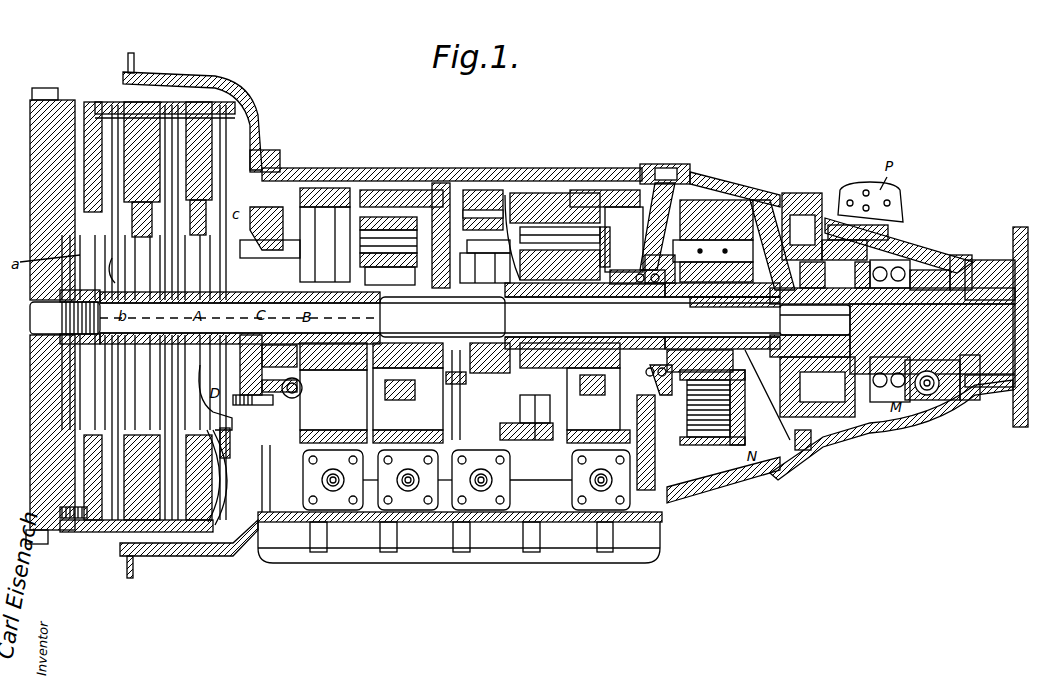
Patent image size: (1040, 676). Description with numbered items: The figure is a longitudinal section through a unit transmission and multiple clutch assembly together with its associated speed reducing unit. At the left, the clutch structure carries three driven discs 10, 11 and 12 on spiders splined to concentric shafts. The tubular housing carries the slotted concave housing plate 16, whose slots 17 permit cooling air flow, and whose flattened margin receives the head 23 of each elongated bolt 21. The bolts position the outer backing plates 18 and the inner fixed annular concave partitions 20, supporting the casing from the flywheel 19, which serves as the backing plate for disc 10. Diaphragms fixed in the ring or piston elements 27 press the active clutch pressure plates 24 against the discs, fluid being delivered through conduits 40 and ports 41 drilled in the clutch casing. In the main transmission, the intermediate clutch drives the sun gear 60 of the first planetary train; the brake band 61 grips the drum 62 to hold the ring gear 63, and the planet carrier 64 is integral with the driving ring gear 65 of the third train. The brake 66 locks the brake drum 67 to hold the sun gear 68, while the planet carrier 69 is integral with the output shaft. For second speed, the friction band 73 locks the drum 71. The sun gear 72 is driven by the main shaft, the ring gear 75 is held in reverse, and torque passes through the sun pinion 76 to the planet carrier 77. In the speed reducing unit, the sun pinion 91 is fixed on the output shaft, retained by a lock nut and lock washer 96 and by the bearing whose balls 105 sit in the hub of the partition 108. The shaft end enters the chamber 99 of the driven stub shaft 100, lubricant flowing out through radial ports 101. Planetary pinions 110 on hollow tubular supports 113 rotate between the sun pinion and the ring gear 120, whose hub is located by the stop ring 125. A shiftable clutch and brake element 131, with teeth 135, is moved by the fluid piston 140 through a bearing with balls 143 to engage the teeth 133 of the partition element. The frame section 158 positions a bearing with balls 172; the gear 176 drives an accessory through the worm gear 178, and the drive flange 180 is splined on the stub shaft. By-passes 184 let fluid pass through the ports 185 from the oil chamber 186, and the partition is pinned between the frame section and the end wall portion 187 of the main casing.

The driven disc 10 is at (75, 152).
The driven disc 11 is at (130, 130).
The driven disc 12 is at (233, 95).
The slotted concave housing plate 16 is at (213, 412).
The slots 17 is at (222, 473).
The outer backing plates 18 is at (121, 100).
The flywheel 19 is at (43, 176).
The inner fixed annular concave partitions 20 is at (88, 135).
The elongated bolts 21 is at (212, 545).
The head 23 is at (233, 547).
The active clutch pressure plates 24 is at (147, 138).
The ring or piston elements 27 is at (220, 437).
The conduits 40 is at (240, 157).
The ports 41 is at (183, 116).
The sun gear 60 is at (405, 316).
The brake band 61 is at (338, 188).
The drum 62 is at (303, 210).
The ring gear 63 is at (373, 210).
The planet carrier 64 is at (388, 404).
The driving ring gear 65 is at (532, 207).
The brake 66 is at (587, 195).
The brake drum 67 is at (624, 239).
The sun gear 68 is at (572, 270).
The planet carrier 69 is at (560, 408).
The drum 71 is at (433, 183).
The sun gear 72 is at (550, 273).
The friction band 73 is at (397, 187).
The ring gear 75 is at (490, 188).
The sun pinion 76 is at (457, 402).
The planet carrier 77 is at (533, 457).
The sun pinion 91 is at (713, 358).
The lock washer 96 is at (735, 320).
The chamber 99 is at (892, 331).
The driven stub shaft 100 is at (978, 373).
The radial ports 101 is at (810, 336).
The balls 105 is at (617, 267).
The partition 108 is at (687, 175).
The planetary pinions 110 is at (730, 213).
The hollow tubular supports 113 is at (677, 257).
The ring gear 120 is at (713, 443).
The stop ring 125 is at (823, 284).
The clutch and brake element 131 is at (869, 285).
The teeth 133 is at (790, 220).
The teeth 135 is at (825, 222).
The fluid piston 140 is at (903, 227).
The balls 143 is at (870, 202).
The frame section 158 is at (907, 247).
The balls 172 is at (927, 270).
The gear 176 is at (953, 257).
The worm gear 178 is at (947, 408).
The drive flange 180 is at (1015, 267).
The by-passes 184 is at (807, 443).
The ports 185 is at (870, 420).
The oil chamber 186 is at (908, 405).
The end wall portion 187 is at (783, 195).